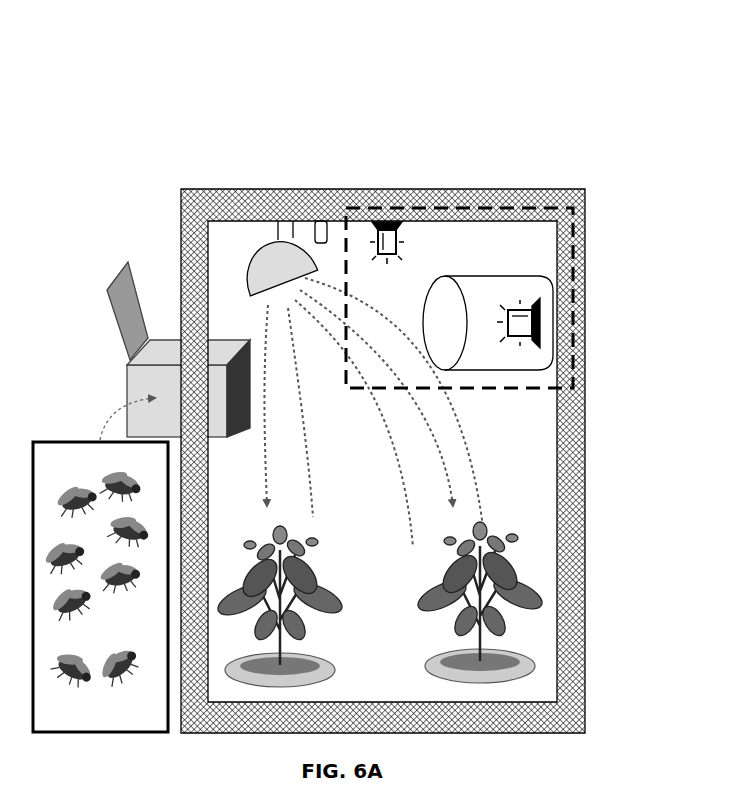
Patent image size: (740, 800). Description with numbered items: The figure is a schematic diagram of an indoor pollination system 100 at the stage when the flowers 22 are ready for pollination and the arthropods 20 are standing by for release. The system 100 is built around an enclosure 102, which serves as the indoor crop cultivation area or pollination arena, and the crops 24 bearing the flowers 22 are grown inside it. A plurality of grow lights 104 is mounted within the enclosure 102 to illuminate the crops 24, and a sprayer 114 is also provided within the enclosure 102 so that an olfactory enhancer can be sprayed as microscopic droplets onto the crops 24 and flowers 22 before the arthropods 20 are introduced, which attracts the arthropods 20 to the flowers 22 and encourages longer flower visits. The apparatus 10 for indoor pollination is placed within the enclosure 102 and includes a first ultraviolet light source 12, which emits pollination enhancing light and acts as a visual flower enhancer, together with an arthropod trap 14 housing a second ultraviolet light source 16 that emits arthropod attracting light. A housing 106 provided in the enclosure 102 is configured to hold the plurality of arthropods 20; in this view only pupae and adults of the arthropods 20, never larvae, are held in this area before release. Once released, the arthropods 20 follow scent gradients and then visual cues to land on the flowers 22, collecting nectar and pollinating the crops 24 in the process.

The indoor pollination system 100 is at (458, 160).
The enclosure 102 is at (193, 235).
The grow lights 104 is at (270, 252).
The housing 106 is at (217, 432).
The sprayer 114 is at (322, 221).
The apparatus for indoor pollination 10 is at (577, 255).
The first ultraviolet light source 12 is at (398, 245).
The arthropod trap 14 is at (490, 276).
The second ultraviolet light source 16 is at (548, 325).
The arthropods 20 is at (77, 498).
The flowers 22 is at (383, 576).
The crops 24 is at (280, 655).